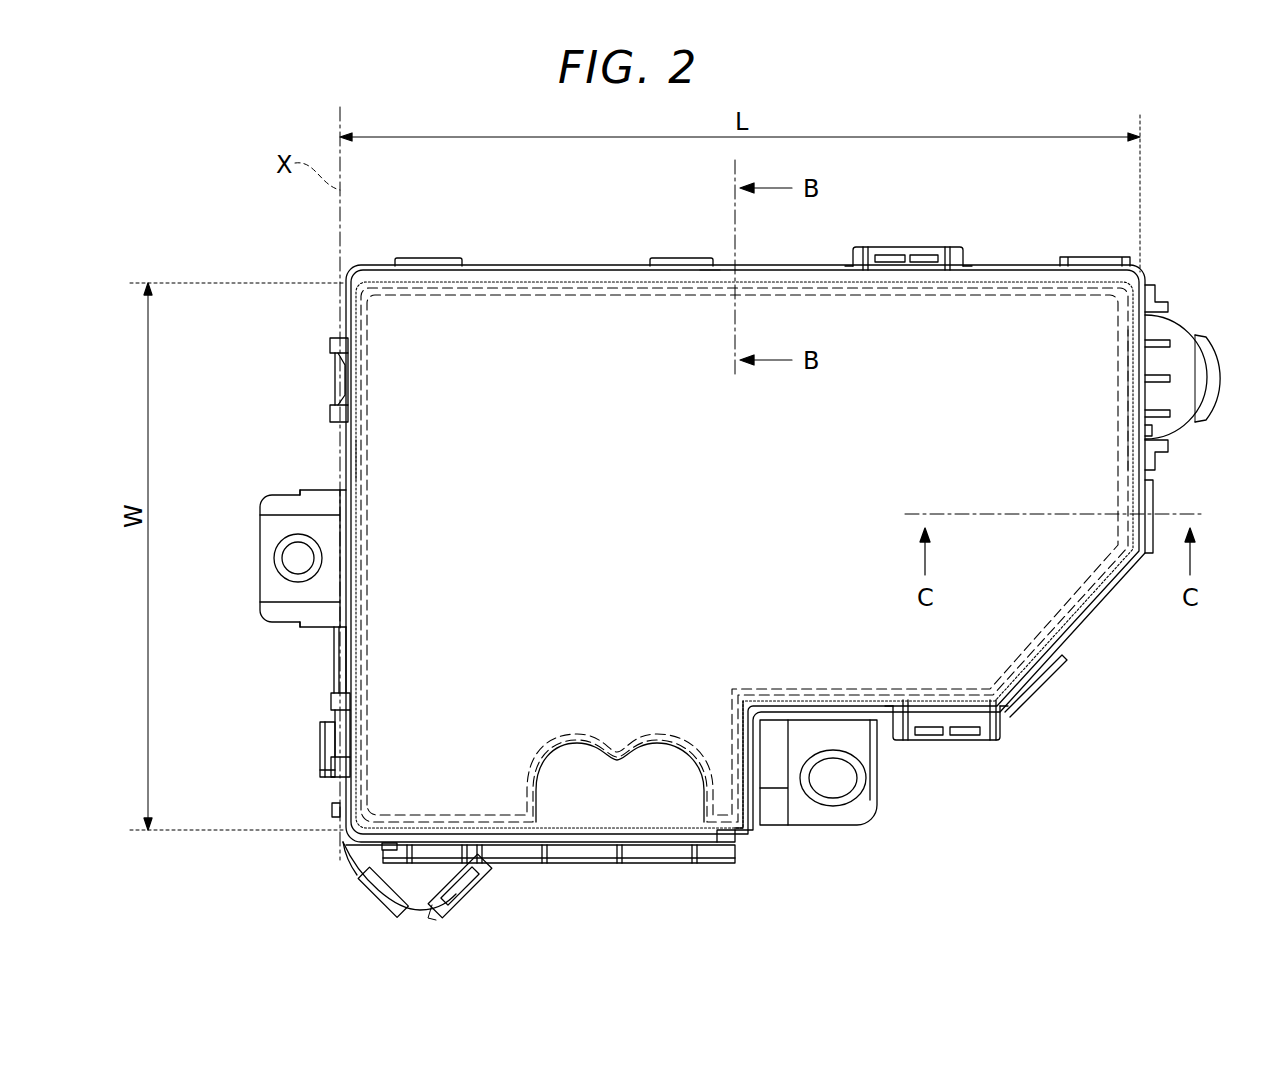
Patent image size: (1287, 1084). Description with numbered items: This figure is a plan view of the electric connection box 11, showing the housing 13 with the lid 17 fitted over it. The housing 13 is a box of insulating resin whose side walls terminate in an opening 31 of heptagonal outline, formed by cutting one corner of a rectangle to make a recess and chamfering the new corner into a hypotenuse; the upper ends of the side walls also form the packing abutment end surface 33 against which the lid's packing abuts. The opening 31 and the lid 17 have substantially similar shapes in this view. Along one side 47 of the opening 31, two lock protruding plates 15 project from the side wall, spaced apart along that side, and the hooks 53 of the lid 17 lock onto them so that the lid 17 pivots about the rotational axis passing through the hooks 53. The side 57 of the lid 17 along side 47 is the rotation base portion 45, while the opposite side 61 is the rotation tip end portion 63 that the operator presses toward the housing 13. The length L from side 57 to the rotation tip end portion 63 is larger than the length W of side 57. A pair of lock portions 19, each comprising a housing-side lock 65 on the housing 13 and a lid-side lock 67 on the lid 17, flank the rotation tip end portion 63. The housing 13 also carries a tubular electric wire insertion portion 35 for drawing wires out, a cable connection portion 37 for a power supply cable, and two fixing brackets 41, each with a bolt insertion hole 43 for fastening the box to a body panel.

The electric connection box 11 is at (288, 237).
The housing 13 is at (336, 842).
The lock protruding plates 15 is at (330, 375).
The lid 17 is at (745, 838).
The lock portions 19 is at (962, 178).
The opening 31 is at (370, 357).
The packing abutment end surface 33 is at (1118, 390).
The electric wire insertion portion 35 is at (1185, 330).
The cable connection portion 37 is at (588, 868).
The fixing brackets 41 is at (268, 490).
The bolt insertion hole 43 is at (290, 560).
The rotation base portion 45 is at (342, 793).
The side of the opening 47 is at (352, 470).
The hooks 53 is at (334, 345).
The side of the lid 57 is at (345, 655).
The side of the lid 61 is at (1146, 495).
The rotation tip end portion 63 is at (1145, 430).
The housing-side lock 65 is at (850, 248).
The lid-side lock 67 is at (910, 247).